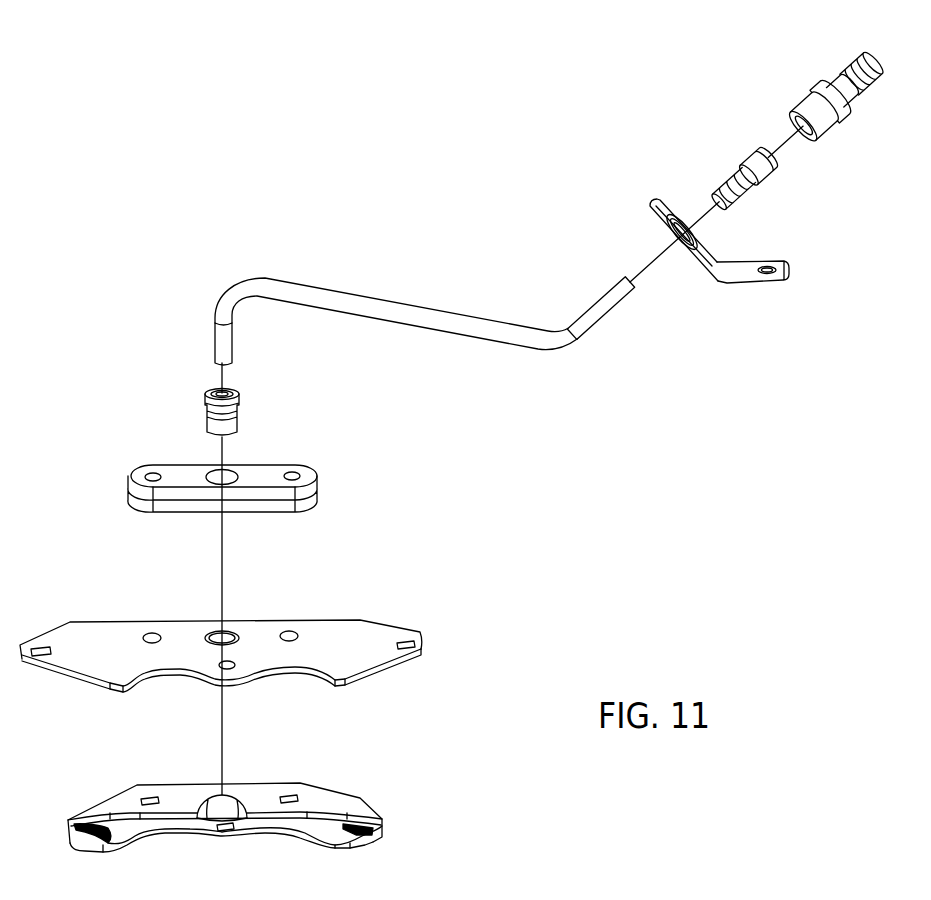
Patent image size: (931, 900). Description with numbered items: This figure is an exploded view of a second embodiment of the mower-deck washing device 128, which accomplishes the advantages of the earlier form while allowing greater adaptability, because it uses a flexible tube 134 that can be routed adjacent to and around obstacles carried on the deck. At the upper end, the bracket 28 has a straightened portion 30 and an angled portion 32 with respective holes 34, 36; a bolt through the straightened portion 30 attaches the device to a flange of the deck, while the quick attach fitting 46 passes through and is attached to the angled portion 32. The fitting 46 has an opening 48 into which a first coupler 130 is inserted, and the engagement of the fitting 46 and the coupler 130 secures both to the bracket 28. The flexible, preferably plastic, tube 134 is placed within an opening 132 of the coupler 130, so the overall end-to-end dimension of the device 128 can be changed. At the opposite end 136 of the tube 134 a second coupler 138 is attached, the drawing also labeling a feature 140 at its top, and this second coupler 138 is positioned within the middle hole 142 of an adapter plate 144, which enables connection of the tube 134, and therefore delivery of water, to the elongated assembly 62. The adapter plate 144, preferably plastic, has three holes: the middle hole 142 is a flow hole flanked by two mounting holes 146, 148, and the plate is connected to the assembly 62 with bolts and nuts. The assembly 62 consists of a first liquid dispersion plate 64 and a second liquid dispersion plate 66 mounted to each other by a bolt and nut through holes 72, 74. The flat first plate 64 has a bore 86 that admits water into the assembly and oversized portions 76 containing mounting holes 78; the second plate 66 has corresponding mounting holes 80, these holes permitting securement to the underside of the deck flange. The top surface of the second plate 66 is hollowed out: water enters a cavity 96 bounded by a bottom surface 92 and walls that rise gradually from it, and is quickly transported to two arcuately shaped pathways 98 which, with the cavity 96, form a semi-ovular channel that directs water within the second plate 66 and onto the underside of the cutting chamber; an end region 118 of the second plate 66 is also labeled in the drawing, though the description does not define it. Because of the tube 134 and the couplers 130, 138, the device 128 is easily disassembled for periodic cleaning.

The washing device 128 is at (239, 120).
The flexible tube 134 is at (430, 308).
The opposite end 136 is at (213, 332).
The second coupler 138 is at (204, 420).
The fitting bore 140 is at (226, 392).
The middle hole 142 is at (234, 466).
The adapter plate 144 is at (204, 500).
The mounting hole 146 is at (142, 479).
The mounting hole 148 is at (303, 477).
The first coupler 130 is at (740, 163).
The opening 132 is at (731, 204).
The quick attach fitting 46 is at (847, 60).
The opening 48 is at (802, 140).
The bracket 28 is at (716, 298).
The angled portion 32 is at (699, 258).
The hole 36 is at (663, 229).
The straightened portion 30 is at (780, 287).
The hole 34 is at (766, 277).
The elongated assembly 62 is at (540, 630).
The first liquid dispersion plate 64 is at (376, 626).
The holes 72 is at (152, 630).
The bore 86 is at (228, 633).
The mounting holes 78 is at (236, 672).
The mounting holes 80 is at (45, 645).
The oversized portions 76 is at (360, 655).
The second liquid dispersion plate 66 is at (356, 800).
The holes 74 is at (148, 792).
The bottom surface 92 is at (240, 800).
The cavity 96 is at (212, 797).
The pathways 98 is at (112, 820).
The right end portion 118 is at (368, 841).